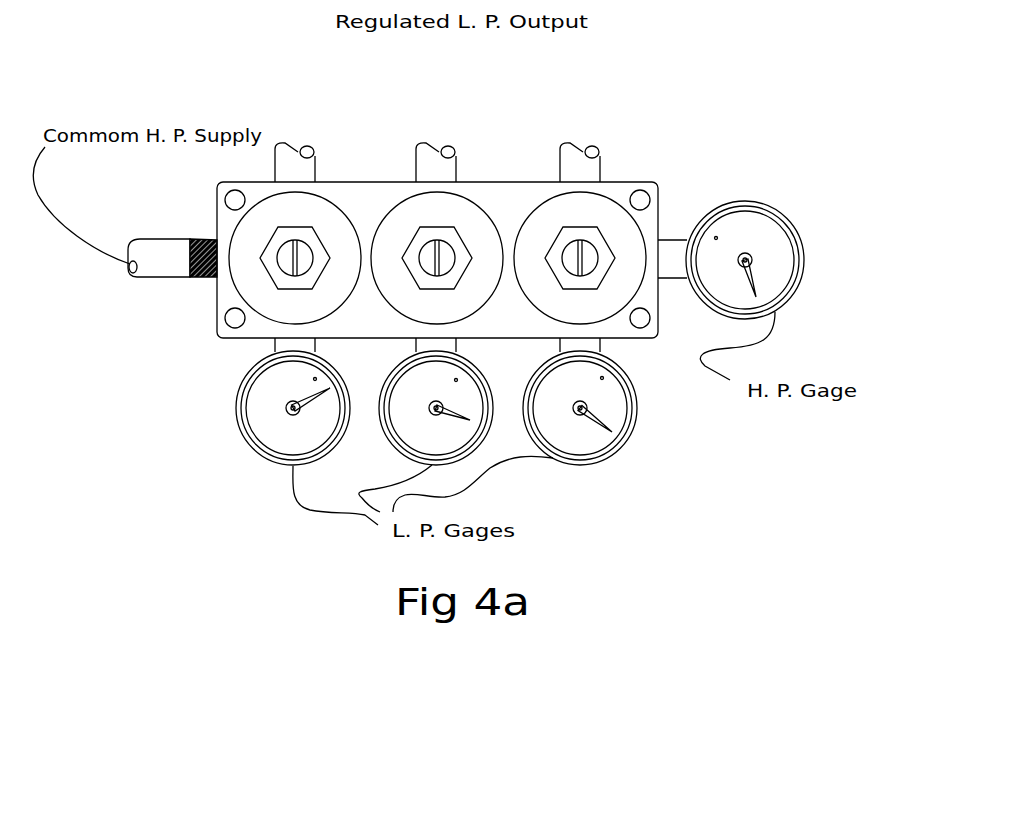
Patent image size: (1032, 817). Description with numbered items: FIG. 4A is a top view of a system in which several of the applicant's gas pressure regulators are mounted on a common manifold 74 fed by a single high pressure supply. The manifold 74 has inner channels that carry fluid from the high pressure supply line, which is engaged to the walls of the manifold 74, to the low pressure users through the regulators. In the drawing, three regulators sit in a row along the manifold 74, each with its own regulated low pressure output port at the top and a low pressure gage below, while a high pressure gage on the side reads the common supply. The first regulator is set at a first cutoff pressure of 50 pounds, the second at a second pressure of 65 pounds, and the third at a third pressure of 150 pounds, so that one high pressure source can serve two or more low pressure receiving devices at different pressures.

The manifold 74 is at (658, 207).
The 50 psi regulated low pressure output port 50 is at (296, 150).
The 65 psi regulated low pressure output port 65 is at (440, 150).
The 150 psi regulated low pressure output port 150 is at (580, 150).